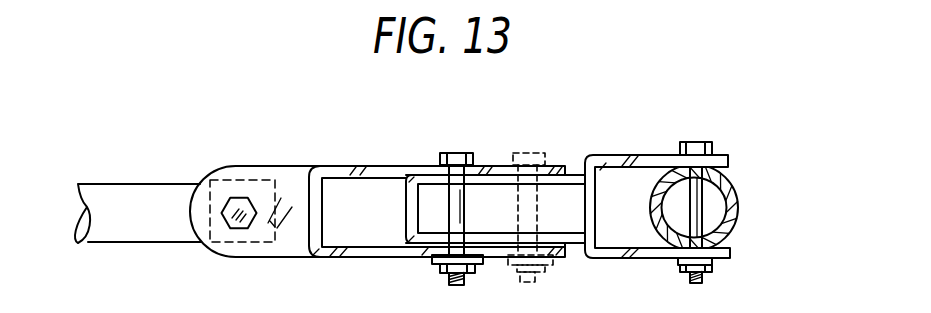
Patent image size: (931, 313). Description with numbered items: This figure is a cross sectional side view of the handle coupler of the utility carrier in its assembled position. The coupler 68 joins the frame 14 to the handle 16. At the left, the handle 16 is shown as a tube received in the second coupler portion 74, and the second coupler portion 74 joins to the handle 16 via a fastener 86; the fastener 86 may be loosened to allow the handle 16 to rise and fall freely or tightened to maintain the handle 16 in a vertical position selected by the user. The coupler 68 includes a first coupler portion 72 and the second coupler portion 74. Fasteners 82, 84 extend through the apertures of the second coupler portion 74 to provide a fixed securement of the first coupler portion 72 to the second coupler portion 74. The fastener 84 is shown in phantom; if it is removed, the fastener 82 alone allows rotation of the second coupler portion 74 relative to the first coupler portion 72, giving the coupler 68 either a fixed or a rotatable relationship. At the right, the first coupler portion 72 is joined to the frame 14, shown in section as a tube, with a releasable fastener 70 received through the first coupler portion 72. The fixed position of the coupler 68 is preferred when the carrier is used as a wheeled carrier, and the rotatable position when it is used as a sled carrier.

The frame 14 is at (740, 203).
The handle 16 is at (130, 202).
The coupler 68 is at (489, 134).
The releasable fasteners 70 is at (698, 147).
The first coupler portion 72 is at (653, 158).
The second coupler portion 74 is at (342, 168).
The fastener 82 is at (452, 157).
The fastener 84 is at (522, 151).
The fastener 86 is at (230, 220).